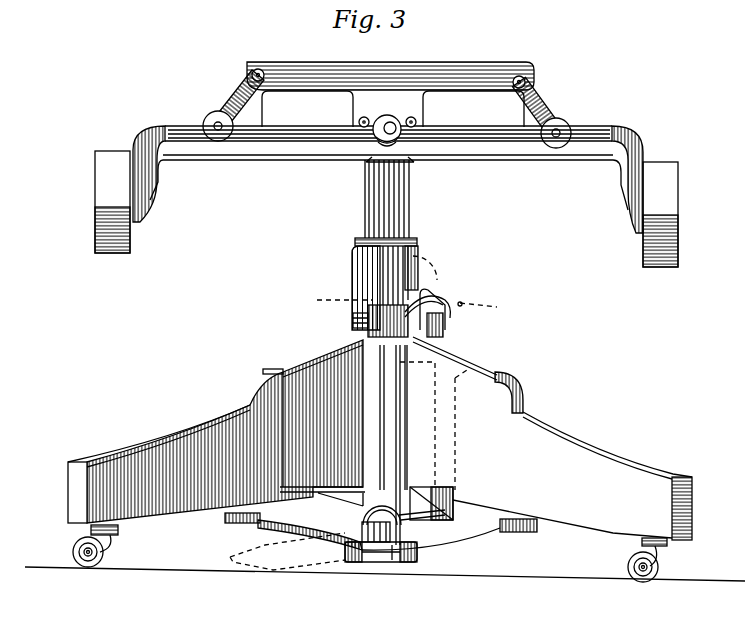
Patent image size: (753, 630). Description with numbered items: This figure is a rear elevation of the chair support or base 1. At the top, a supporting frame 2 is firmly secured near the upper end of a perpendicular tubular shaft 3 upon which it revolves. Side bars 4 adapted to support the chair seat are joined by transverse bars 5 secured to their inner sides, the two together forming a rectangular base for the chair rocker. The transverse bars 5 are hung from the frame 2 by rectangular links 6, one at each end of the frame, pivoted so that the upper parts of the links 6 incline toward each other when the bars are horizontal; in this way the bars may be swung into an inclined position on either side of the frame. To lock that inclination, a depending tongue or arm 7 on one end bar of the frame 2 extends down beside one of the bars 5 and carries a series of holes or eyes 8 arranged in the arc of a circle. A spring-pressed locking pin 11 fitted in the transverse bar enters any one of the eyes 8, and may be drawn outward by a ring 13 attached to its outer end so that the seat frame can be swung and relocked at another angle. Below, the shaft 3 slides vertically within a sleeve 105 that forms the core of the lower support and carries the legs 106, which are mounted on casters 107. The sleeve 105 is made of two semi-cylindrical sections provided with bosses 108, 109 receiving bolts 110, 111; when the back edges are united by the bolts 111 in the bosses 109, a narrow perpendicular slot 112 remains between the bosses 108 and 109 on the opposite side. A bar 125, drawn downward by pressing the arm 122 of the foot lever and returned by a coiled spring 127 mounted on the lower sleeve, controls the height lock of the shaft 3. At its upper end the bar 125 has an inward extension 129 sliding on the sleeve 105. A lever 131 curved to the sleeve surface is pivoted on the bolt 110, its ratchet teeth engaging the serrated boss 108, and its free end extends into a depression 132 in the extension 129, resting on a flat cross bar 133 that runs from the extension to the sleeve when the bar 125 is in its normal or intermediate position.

The chair base 1 is at (246, 371).
The supporting frame 2 is at (478, 74).
The tubular shaft 3 is at (409, 215).
The side bars 4 is at (112, 182).
The transverse bars 5 is at (610, 137).
The rectangular links 6 is at (232, 108).
The depending tongue or arm 7 is at (403, 107).
The holes or eyes 8 is at (366, 117).
The locking bolt or pin 11 is at (378, 133).
The ring 13 is at (408, 161).
The sleeve 105 is at (417, 255).
The legs 106 is at (197, 432).
The casters 107 is at (105, 552).
The bosses or rings 108 is at (432, 300).
The bosses or rings 109 is at (352, 333).
The bolt 110 is at (357, 325).
The bolts 111 is at (400, 562).
The perpendicular slot 112 is at (402, 430).
The arm of the foot lever 122 is at (473, 538).
The bar 125 is at (467, 355).
The coiled spring 127 is at (392, 494).
The inward extension 129 is at (428, 283).
The lever 131 is at (450, 322).
The depression or hole 132 is at (462, 304).
The flat cross bar 133 is at (438, 318).